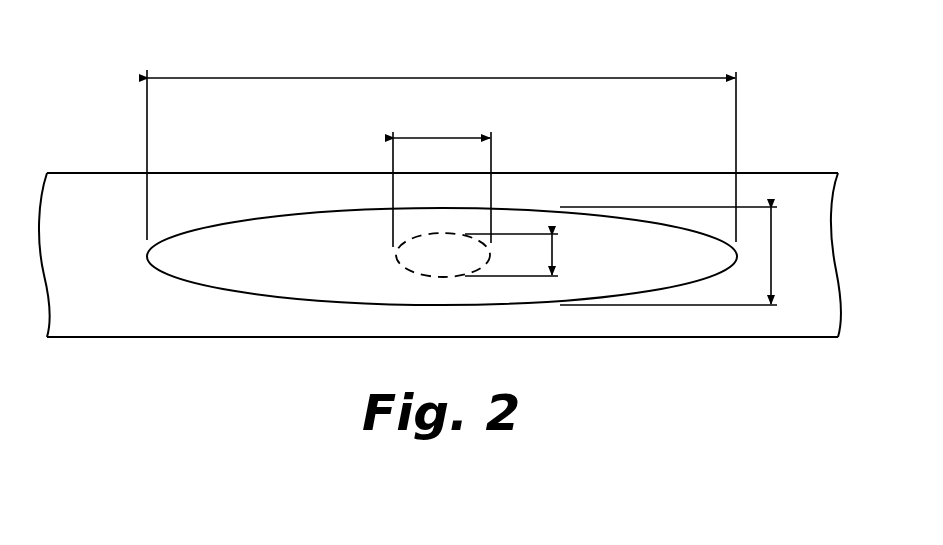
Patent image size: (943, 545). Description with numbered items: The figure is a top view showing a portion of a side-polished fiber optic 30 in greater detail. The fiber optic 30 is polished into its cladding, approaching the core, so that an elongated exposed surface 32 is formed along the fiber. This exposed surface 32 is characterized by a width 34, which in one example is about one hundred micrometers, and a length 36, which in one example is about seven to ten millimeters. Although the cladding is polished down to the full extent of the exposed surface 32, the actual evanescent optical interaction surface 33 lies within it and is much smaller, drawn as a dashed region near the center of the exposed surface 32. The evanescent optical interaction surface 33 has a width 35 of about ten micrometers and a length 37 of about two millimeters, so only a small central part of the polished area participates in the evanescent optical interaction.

The fiber optic 30 is at (850, 173).
The exposed surface 32 is at (231, 291).
The evanescent optical interaction surface 33 is at (395, 252).
The width 34 is at (772, 258).
The width 35 is at (558, 255).
The length 36 is at (437, 78).
The length 37 is at (436, 138).